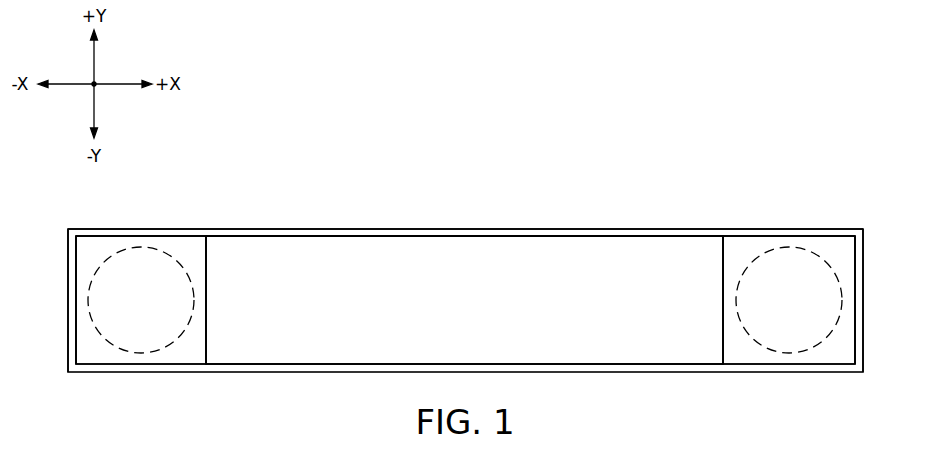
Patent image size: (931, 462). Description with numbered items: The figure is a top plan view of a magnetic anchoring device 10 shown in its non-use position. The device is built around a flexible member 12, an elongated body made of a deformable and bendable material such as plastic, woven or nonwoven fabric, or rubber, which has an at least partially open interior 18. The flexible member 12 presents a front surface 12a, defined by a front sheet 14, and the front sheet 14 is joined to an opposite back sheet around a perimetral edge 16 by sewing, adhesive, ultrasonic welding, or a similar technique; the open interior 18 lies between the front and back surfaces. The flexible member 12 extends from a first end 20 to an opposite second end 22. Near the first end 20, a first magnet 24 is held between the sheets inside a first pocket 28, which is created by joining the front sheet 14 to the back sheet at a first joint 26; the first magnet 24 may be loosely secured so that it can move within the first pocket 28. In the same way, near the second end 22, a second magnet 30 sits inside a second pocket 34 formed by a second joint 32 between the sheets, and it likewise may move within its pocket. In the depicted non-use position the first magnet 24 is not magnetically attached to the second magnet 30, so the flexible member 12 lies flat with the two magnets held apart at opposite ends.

The magnetic anchoring device 10 is at (465, 241).
The flexible member 12 is at (465, 246).
The front surface 12a is at (590, 247).
The front sheet 14 is at (91, 231).
The perimetral edge 16 is at (305, 235).
The open interior 18 is at (362, 247).
The first end 20 is at (68, 300).
The second end 22 is at (863, 300).
The first magnet 24 is at (140, 246).
The first joint 26 is at (207, 300).
The first pocket 28 is at (180, 246).
The second magnet 30 is at (787, 246).
The second joint 32 is at (723, 300).
The second pocket 34 is at (750, 246).